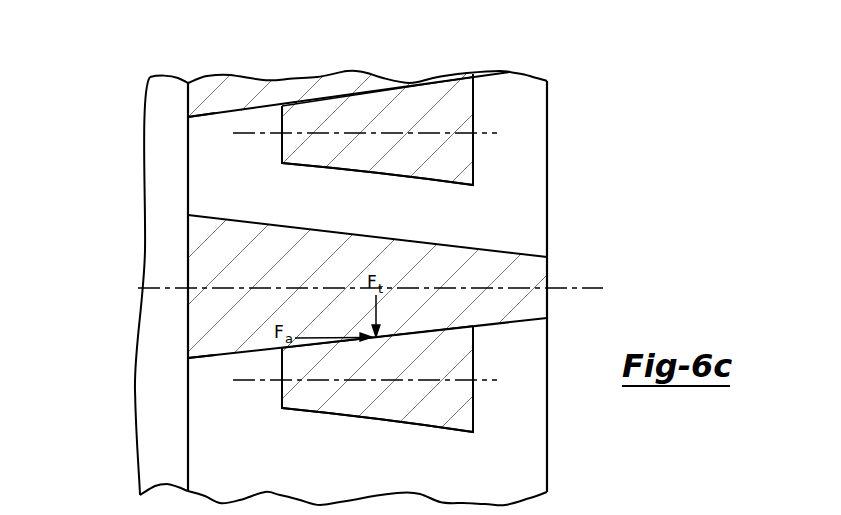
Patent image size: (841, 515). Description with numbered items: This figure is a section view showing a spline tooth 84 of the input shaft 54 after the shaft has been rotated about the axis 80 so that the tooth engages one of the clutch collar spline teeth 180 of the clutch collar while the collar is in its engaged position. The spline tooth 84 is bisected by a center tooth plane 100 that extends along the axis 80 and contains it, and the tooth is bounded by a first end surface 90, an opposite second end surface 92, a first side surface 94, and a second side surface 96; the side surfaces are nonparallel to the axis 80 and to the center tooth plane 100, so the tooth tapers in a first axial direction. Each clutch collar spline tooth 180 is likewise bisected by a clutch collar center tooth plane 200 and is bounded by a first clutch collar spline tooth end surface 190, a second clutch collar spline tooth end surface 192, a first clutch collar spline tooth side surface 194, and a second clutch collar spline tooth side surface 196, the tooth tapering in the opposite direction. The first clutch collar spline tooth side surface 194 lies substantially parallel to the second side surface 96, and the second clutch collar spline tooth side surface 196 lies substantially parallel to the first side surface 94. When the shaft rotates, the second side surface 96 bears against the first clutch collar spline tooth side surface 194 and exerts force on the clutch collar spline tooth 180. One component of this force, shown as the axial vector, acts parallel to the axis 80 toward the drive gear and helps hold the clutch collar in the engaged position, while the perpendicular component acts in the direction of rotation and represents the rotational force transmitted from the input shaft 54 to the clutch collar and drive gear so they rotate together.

The input shaft 54 is at (360, 464).
The axis 80 is at (164, 288).
The spline teeth 84 is at (240, 86).
The first end surface 90 is at (187, 323).
The second end surface 92 is at (547, 302).
The first side surface 94 is at (413, 241).
The second side surface 96 is at (218, 118).
The center tooth plane 100 is at (164, 489).
The clutch collar spline teeth 180 is at (380, 126).
The first clutch collar spline tooth end surface 190 is at (283, 107).
The second clutch collar spline tooth end surface 192 is at (473, 160).
The first clutch collar spline tooth side surface 194 is at (336, 100).
The second clutch collar spline tooth side surface 196 is at (402, 181).
The clutch collar center tooth plane 200 is at (490, 132).